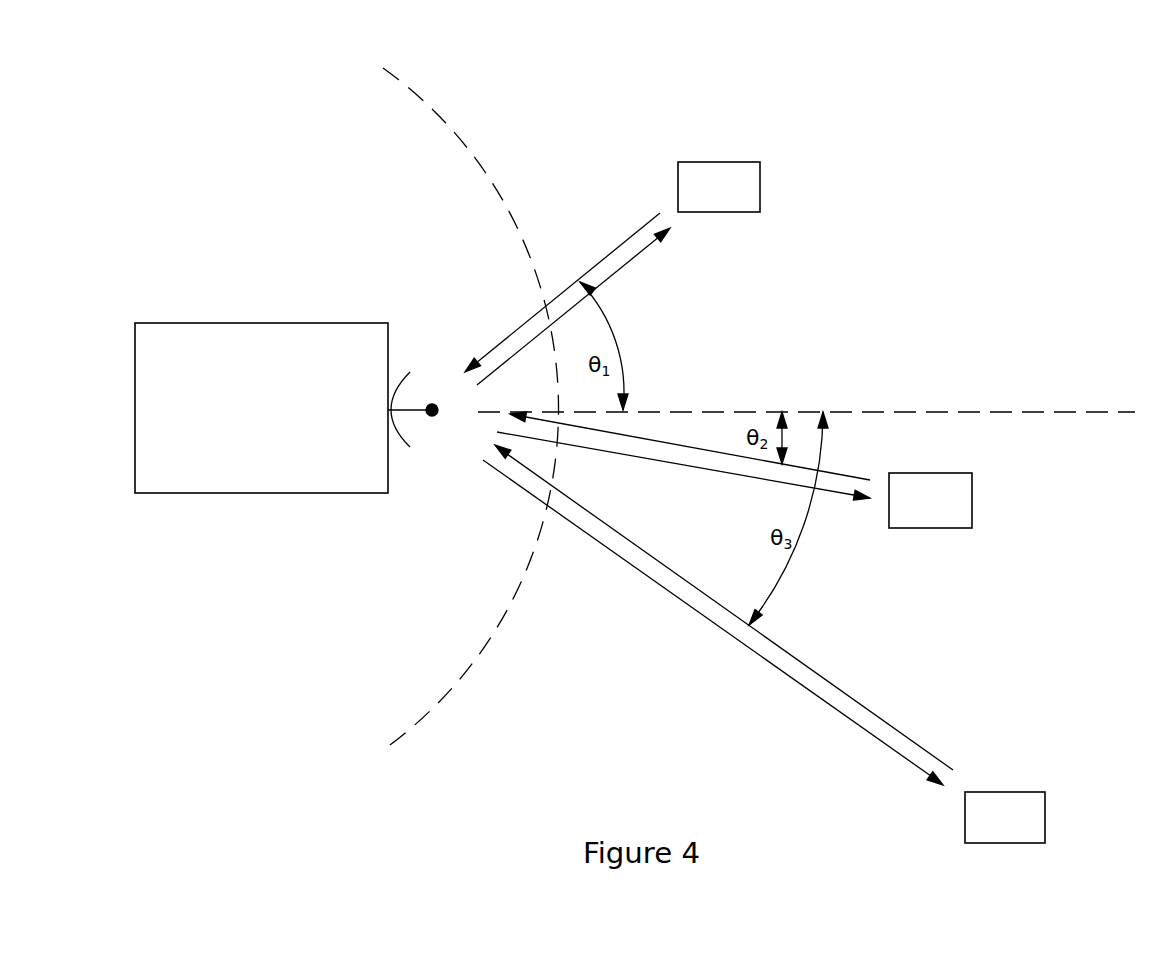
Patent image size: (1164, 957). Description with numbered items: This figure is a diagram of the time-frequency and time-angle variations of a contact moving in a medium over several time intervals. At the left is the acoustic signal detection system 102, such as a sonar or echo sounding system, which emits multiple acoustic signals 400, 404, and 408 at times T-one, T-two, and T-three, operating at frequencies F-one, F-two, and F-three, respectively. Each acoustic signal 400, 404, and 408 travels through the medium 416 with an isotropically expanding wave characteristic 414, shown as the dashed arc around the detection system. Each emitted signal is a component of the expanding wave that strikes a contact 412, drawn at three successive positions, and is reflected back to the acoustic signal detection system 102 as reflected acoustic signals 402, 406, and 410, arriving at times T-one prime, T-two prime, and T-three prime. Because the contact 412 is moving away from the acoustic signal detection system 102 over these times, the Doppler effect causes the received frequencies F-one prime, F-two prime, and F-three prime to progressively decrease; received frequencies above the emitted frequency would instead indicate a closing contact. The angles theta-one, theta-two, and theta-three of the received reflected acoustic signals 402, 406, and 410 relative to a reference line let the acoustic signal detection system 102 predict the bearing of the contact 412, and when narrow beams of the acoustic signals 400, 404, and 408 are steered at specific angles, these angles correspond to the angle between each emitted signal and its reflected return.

The acoustic signal detection system 102 is at (293, 323).
The acoustic signal 400 is at (647, 249).
The reflected acoustic signal 402 is at (645, 226).
The acoustic signal 404 is at (833, 496).
The reflected acoustic signal 406 is at (857, 478).
The acoustic signal 408 is at (910, 762).
The reflected acoustic signal 410 is at (904, 735).
The contact 412 is at (760, 180).
The isotropically expanding wave characteristic 414 is at (431, 107).
The medium 416 is at (591, 700).